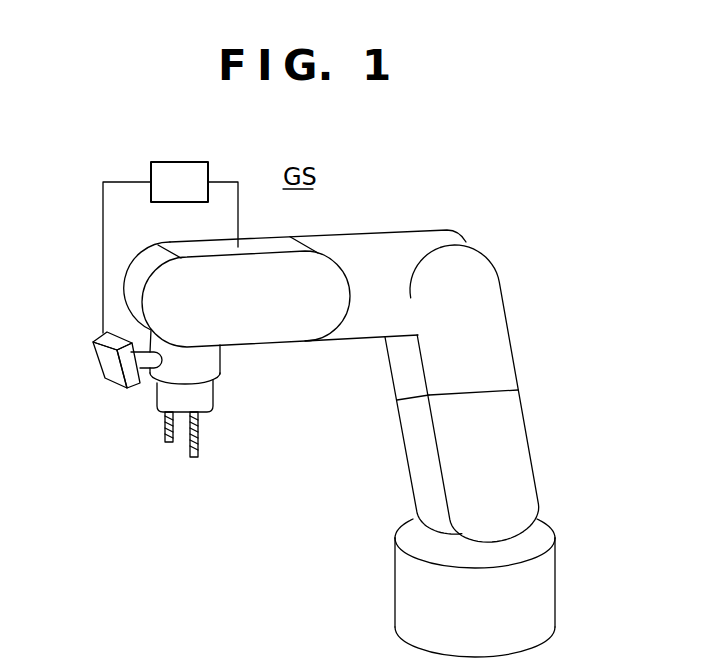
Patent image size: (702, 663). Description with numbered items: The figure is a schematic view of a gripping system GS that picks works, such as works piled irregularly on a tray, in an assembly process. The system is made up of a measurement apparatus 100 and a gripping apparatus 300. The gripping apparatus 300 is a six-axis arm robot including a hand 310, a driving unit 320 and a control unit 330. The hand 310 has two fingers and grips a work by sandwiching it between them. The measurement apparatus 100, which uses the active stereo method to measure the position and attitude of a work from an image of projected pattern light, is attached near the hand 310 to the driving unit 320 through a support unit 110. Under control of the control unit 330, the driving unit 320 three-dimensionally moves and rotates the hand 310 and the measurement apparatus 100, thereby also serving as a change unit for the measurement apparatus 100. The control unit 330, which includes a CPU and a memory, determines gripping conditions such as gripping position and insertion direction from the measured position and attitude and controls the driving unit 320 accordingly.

The measurement apparatus 100 is at (110, 357).
The support unit 110 is at (143, 369).
The gripping apparatus 300 is at (471, 210).
The hand 310 is at (200, 438).
The driving unit 320 is at (365, 231).
The control unit 330 is at (178, 161).